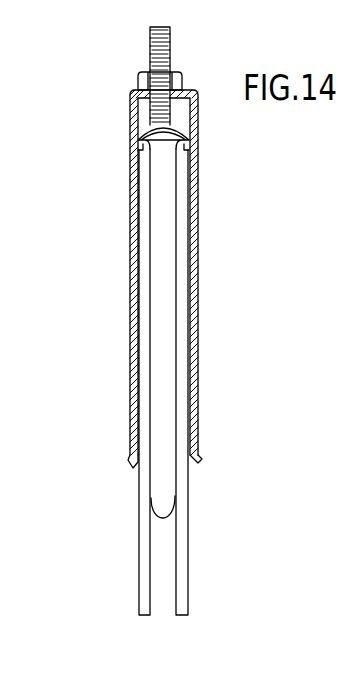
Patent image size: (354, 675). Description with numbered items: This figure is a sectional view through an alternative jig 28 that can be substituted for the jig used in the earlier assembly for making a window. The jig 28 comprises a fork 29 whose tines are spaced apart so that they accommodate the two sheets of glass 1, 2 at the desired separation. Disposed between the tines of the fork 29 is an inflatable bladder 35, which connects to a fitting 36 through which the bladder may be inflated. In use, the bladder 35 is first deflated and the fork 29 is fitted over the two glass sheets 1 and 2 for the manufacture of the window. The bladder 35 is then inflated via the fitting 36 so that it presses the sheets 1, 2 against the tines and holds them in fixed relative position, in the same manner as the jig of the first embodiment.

The fitting 36 is at (150, 41).
The jig 28 is at (130, 95).
The fork 29 is at (136, 312).
The inflatable bladder 35 is at (158, 500).
The sheet of glass 1 is at (142, 605).
The sheet of glass 2 is at (183, 600).